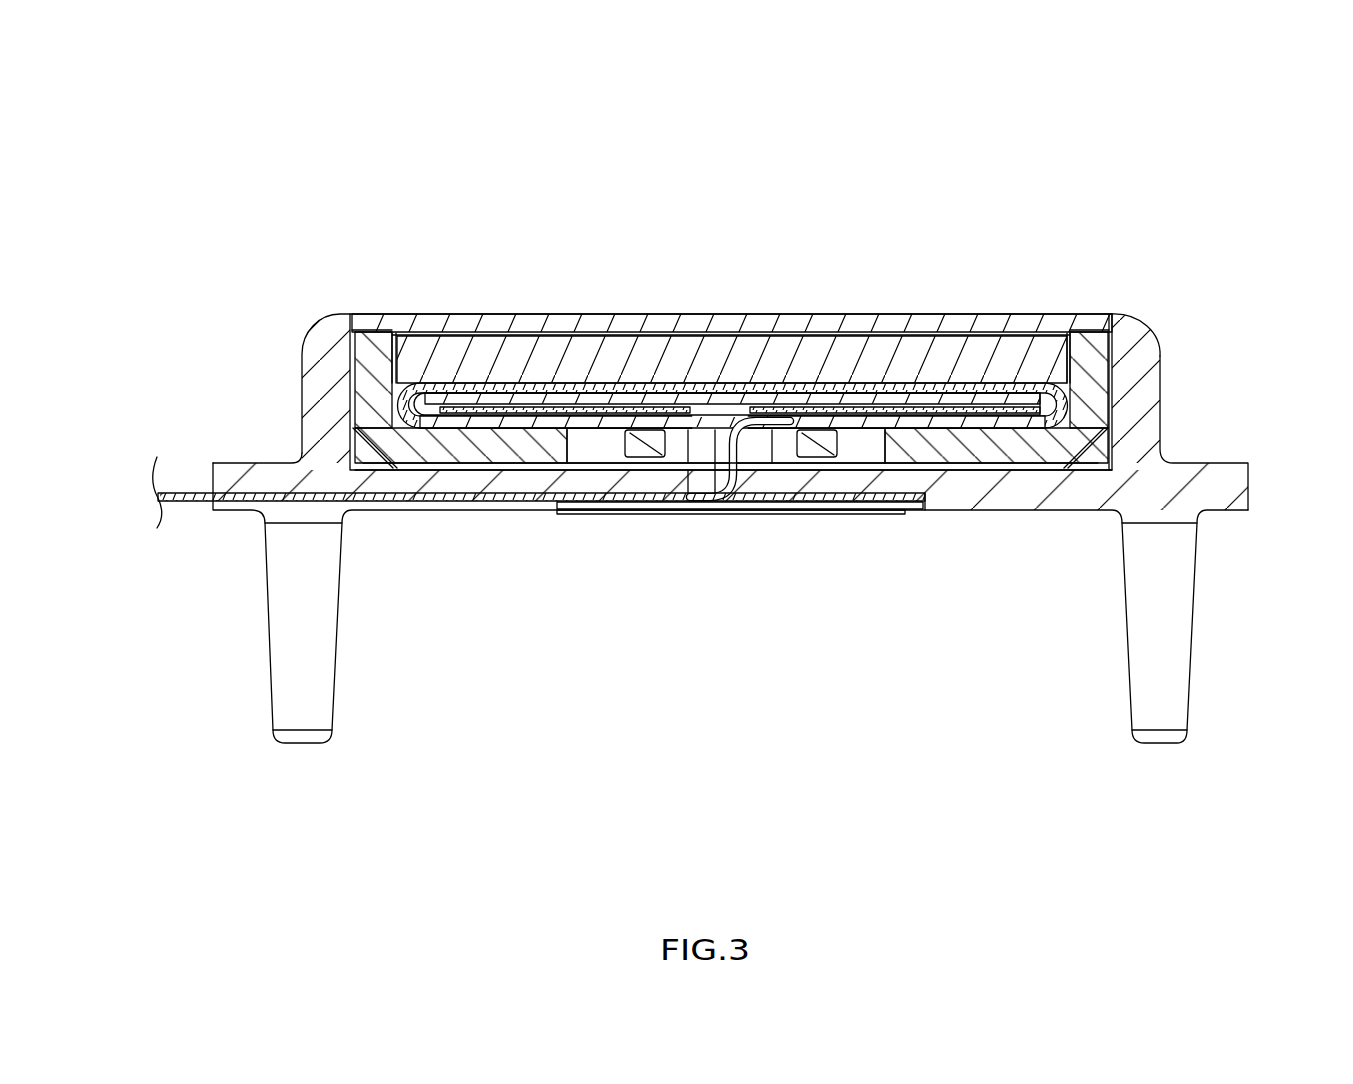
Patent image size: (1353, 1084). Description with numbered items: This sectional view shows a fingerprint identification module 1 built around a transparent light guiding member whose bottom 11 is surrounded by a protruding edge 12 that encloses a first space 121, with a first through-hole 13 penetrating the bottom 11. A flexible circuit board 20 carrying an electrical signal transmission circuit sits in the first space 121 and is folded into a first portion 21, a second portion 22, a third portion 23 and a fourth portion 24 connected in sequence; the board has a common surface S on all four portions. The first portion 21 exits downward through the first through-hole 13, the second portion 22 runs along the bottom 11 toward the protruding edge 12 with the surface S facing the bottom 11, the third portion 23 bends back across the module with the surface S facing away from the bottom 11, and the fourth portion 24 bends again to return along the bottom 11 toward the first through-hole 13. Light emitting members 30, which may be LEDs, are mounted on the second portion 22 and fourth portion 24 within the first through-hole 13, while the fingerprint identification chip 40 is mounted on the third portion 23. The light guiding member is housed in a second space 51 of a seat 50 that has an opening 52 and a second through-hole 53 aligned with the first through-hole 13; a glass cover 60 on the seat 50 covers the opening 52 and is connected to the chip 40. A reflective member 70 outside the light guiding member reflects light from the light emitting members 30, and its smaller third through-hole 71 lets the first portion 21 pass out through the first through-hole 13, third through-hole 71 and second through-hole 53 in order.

The fingerprint identification module 1 is at (1193, 156).
The bottom 11 is at (988, 455).
The protruding edge 12 is at (373, 363).
The first through-hole 13 is at (868, 452).
The flexible circuit board 20 is at (181, 490).
The first portion 21 is at (700, 470).
The second portion 22 is at (1030, 418).
The third portion 23 is at (750, 385).
The fourth portion 24 is at (482, 422).
The light emitting members 30 is at (641, 448).
The fingerprint identification chip 40 is at (1028, 352).
The seat 50 is at (1148, 357).
The second space 51 is at (1112, 452).
The opening 52 is at (1120, 305).
The second through-hole 53 is at (770, 490).
The glass cover 60 is at (986, 306).
The reflective member 70 is at (502, 476).
The third through-hole 71 is at (765, 470).
The first space 121 is at (402, 385).
The surface S is at (190, 503).